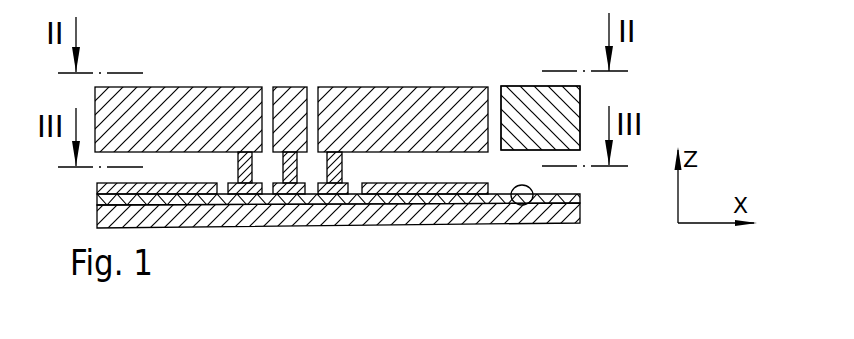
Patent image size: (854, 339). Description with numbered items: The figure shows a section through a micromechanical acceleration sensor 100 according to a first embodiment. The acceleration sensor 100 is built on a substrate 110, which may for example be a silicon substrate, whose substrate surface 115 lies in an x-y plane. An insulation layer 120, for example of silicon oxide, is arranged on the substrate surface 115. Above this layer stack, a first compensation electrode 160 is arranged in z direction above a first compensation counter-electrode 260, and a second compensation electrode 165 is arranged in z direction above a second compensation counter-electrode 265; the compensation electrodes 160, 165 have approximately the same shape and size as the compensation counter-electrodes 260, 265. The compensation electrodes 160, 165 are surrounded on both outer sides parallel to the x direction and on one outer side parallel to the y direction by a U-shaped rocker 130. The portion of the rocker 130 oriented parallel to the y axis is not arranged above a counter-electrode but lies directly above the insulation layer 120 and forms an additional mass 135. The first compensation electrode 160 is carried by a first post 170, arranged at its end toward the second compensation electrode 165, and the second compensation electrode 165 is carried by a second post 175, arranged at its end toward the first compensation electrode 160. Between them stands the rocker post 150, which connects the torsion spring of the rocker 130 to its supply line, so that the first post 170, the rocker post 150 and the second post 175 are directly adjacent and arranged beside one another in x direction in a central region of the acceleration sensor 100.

The acceleration sensor 100 is at (645, 71).
The substrate 110 is at (570, 223).
The substrate surface 115 is at (530, 203).
The insulation layer 120 is at (563, 196).
The rocker 130 is at (533, 105).
The additional mass 135 is at (537, 87).
The rocker post 150 is at (288, 100).
The first compensation electrode 160 is at (225, 100).
The second compensation electrode 165 is at (415, 102).
The first post 170 is at (244, 184).
The second post 175 is at (334, 184).
The first compensation counter-electrode 260 is at (97, 185).
The second compensation counter-electrode 265 is at (432, 194).